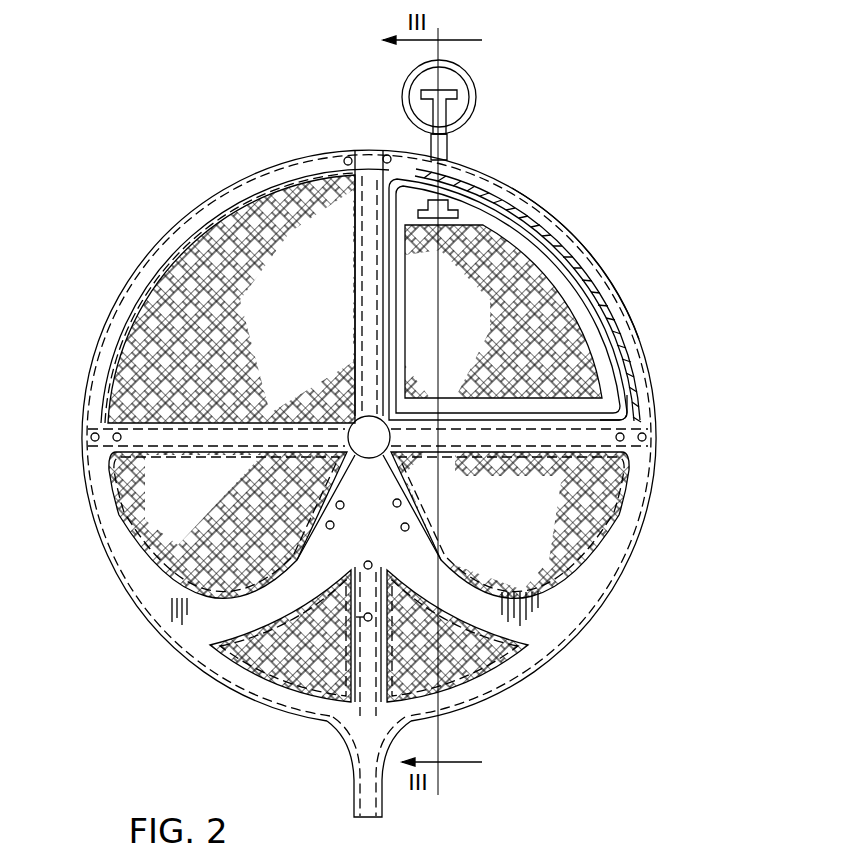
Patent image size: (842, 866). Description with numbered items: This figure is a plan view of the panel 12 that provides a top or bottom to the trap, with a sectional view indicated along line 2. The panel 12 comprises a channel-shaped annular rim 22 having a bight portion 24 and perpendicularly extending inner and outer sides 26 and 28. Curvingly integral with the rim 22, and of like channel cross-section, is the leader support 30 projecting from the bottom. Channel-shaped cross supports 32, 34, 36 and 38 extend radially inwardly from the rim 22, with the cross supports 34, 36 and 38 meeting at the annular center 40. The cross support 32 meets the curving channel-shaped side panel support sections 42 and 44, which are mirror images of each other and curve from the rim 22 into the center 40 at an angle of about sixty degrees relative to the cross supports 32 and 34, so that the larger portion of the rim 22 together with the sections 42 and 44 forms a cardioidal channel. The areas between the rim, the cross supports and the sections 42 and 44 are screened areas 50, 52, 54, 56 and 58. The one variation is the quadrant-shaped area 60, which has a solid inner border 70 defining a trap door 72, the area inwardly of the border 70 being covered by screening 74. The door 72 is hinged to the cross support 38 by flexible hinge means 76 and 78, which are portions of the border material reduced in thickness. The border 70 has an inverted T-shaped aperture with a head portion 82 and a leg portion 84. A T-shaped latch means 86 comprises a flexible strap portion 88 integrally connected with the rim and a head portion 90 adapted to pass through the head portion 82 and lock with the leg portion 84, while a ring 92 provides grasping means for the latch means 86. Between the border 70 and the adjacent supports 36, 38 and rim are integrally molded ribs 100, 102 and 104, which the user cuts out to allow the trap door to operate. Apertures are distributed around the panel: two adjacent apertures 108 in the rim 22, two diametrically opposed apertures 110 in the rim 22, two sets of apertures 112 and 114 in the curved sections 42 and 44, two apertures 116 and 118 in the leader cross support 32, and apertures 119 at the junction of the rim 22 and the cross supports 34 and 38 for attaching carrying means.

The valve body 2 is at (483, 708).
The top panel 12 is at (645, 221).
The channel-shaped annular rim 22 is at (190, 225).
The bight portion 24 is at (163, 262).
The inner side 26 is at (150, 308).
The outer side 28 is at (248, 182).
The leader support 30 is at (352, 797).
The cross support 32 is at (348, 668).
The cross support 34 is at (210, 450).
The cross support 36 is at (352, 180).
The cross support 38 is at (648, 488).
The annular center 40 is at (369, 437).
The side panel support section 42 is at (162, 598).
The side panel support section 44 is at (535, 615).
The screened area 50 is at (240, 680).
The screened area 52 is at (160, 545).
The screened area 54 is at (175, 338).
The screened area 56 is at (610, 565).
The screened area 58 is at (538, 728).
The quadrant-shaped area 60 is at (620, 297).
The solid inner border 70 is at (630, 318).
The trap door 72 is at (553, 215).
The screening 74 is at (625, 352).
The flexible hinge means 76 is at (466, 392).
The flexible hinge means 78 is at (640, 410).
The head portion 82 is at (525, 203).
The leg portion 84 is at (462, 208).
The latch means 86 is at (494, 88).
The flexible strap portion 88 is at (452, 148).
The head portion 90 is at (452, 80).
The ring 92 is at (410, 80).
The rib 100 is at (590, 276).
The rib 102 is at (515, 452).
The rib 104 is at (372, 258).
The apertures 108 is at (387, 154).
The apertures 110 is at (92, 434).
The apertures 112 is at (334, 528).
The apertures 114 is at (396, 506).
The aperture 116 is at (374, 563).
The aperture 118 is at (342, 592).
The apertures 119 is at (112, 437).